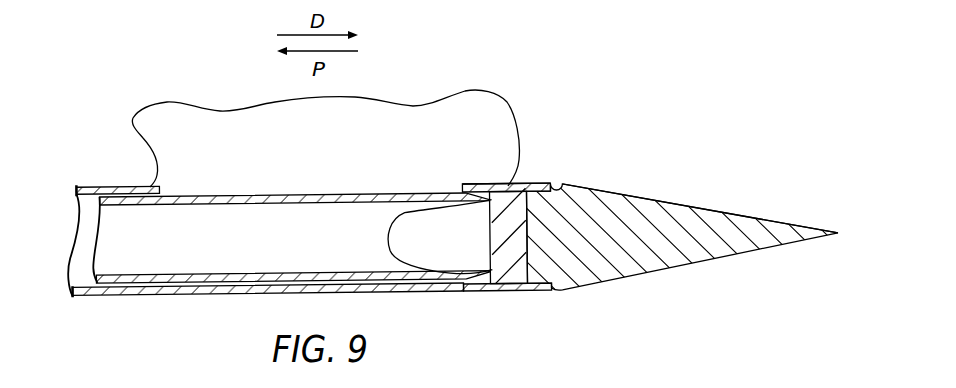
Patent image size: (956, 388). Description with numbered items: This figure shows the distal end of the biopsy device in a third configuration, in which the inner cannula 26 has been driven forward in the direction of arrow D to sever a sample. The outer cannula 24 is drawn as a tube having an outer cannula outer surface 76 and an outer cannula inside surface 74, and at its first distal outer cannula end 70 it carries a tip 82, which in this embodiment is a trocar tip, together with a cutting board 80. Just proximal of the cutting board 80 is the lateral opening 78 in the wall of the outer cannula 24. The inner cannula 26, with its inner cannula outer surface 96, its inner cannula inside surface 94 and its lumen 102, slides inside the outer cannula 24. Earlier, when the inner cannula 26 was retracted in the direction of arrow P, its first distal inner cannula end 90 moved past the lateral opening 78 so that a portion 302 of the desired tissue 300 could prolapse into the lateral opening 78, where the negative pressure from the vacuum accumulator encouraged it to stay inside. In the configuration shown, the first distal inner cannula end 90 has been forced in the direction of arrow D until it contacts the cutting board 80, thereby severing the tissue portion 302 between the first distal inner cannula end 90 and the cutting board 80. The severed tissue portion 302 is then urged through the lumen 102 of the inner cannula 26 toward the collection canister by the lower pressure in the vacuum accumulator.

The desired tissue 300 is at (485, 102).
The outer cannula outer surface 76 is at (104, 184).
The outer cannula inside surface 74 is at (90, 196).
The lumen 102 is at (162, 253).
The inner cannula outer surface 96 is at (238, 190).
The inner cannula inside surface 94 is at (209, 207).
The inner cannula 26 is at (407, 291).
The cutting board 80 is at (522, 291).
The lateral opening 78 is at (462, 185).
The outer cannula 24 is at (502, 185).
The tissue portion 302 is at (407, 238).
The first distal inner cannula end 90 is at (512, 268).
The first distal outer cannula end 70 is at (558, 189).
The tip 82 is at (698, 207).